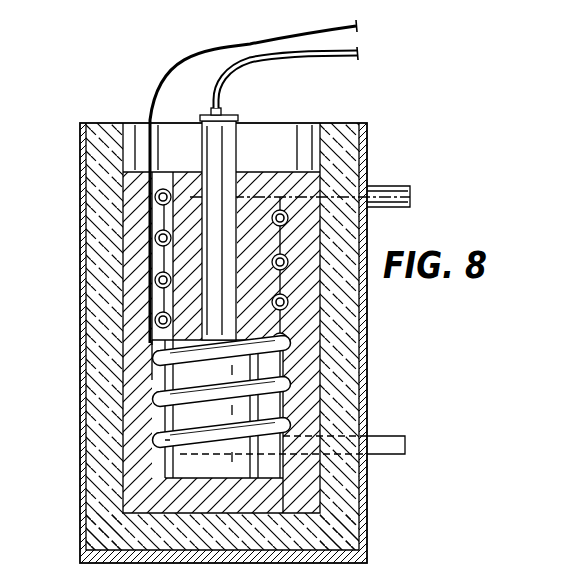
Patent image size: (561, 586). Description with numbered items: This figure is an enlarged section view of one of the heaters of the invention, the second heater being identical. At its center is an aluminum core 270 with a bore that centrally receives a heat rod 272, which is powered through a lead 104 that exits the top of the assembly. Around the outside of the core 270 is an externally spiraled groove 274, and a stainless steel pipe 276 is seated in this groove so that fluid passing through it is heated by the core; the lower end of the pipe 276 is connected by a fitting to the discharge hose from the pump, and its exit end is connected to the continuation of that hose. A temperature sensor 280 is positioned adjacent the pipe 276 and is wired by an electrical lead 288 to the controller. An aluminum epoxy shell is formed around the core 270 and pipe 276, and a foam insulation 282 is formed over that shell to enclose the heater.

The lead 104 is at (306, 62).
The aluminum core 270 is at (279, 463).
The heat rod 272 is at (236, 142).
The externally spiraled groove 274 is at (292, 354).
The stainless steel pipe 276 is at (158, 441).
The temperature sensor 280 is at (160, 205).
The foam insulation 282 is at (341, 382).
The electrical lead 288 is at (276, 41).